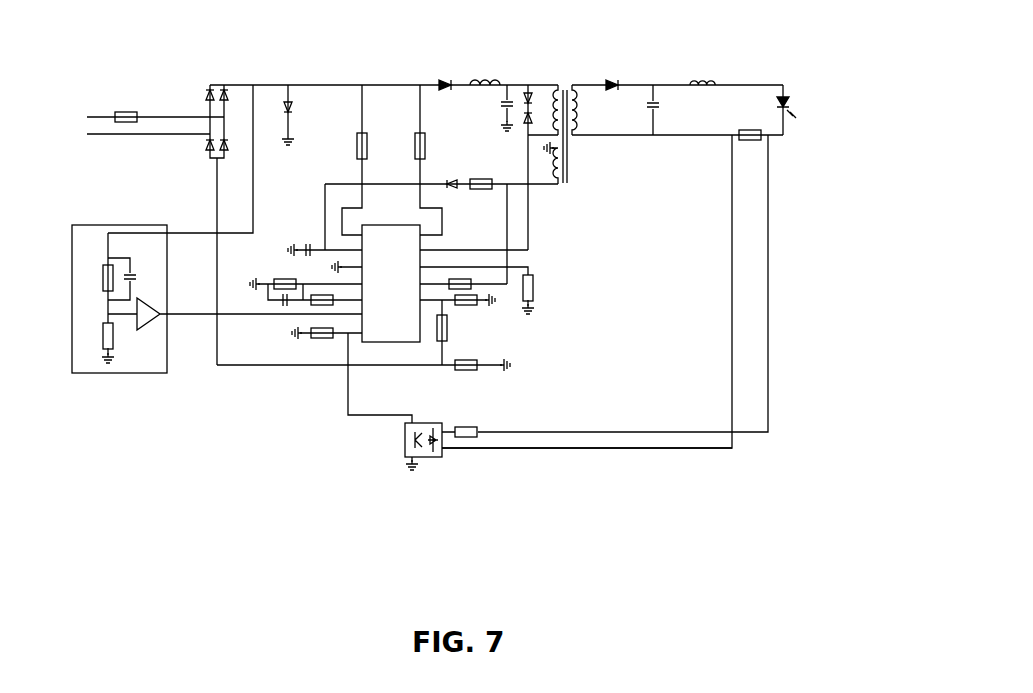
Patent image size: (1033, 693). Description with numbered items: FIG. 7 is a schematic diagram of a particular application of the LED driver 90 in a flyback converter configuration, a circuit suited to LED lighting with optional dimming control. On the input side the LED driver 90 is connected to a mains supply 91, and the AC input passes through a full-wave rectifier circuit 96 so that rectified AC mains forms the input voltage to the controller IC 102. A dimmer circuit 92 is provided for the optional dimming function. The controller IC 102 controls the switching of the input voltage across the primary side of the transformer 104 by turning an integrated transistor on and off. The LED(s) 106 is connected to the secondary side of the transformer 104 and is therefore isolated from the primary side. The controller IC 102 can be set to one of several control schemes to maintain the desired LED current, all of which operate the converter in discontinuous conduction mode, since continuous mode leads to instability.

The LED driver 90 is at (246, 394).
The mains supply 91 is at (82, 120).
The dimmer circuit 92 is at (90, 222).
The full-wave rectifier circuit 96 is at (203, 90).
The controller IC 102 is at (410, 224).
The transformer 104 is at (558, 90).
The LED(s) 106 is at (788, 100).